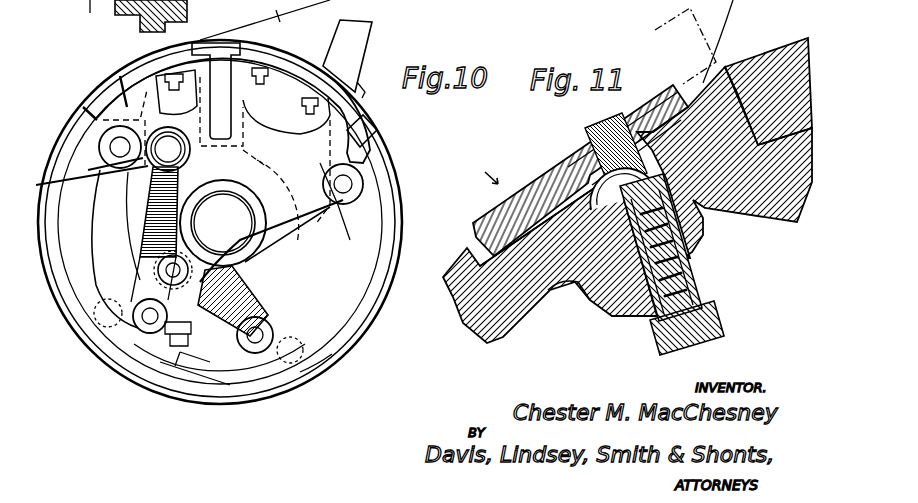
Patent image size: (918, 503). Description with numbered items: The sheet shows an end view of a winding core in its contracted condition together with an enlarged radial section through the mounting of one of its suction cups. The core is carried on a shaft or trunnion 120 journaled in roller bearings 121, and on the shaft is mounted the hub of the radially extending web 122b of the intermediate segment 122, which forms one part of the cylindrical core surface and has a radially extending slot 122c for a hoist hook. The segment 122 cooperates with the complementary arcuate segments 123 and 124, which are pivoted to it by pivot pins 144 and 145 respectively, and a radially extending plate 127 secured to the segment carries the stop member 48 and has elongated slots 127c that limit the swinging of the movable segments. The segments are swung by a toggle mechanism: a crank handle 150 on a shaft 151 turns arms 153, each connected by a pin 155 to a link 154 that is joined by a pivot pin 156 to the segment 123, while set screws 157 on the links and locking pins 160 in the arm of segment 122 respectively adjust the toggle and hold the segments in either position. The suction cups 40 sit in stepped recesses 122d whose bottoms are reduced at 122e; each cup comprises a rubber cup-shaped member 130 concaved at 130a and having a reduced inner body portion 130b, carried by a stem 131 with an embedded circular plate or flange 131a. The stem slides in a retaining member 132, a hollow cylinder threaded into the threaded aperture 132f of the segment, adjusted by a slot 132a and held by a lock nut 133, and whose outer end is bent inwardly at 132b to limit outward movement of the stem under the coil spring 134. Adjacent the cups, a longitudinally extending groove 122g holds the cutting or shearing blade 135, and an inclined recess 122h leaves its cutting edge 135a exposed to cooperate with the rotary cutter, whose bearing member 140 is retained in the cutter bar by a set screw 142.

In FIG. 10, the shaft or trunnion 120 is at (253, 255).
In FIG. 10, the roller bearings 121 is at (293, 11).
In FIG. 10, the segment 122 is at (330, 88).
In FIG. 11, the segment 122 is at (465, 322).
In FIG. 10, the radially extending web 122b is at (307, 203).
In FIG. 10, the radially extending slot 122c is at (265, 20).
In FIG. 11, the recesses 122d is at (470, 246).
In FIG. 11, the reduced bottom portion of recess 122e is at (523, 250).
In FIG. 11, the longitudinally extending groove 122g is at (787, 137).
In FIG. 10, the longitudinal inclined recess 122h is at (363, 100).
In FIG. 10, the segment 123 is at (343, 340).
In FIG. 10, the segment 124 is at (78, 283).
In FIG. 10, the radially extending plate 127 is at (227, 400).
In FIG. 10, the slots 127c is at (100, 333).
In FIG. 11, the cup-shaped member 130 is at (533, 185).
In FIG. 11, the concaved outer side 130a is at (570, 165).
In FIG. 11, the inner body portion 130b is at (650, 118).
In FIG. 11, the stem 131 is at (560, 288).
In FIG. 11, the circular plate or flange 131a is at (584, 150).
In FIG. 11, the retaining member 132 is at (640, 292).
In FIG. 11, the slot 132a is at (696, 322).
In FIG. 11, the inwardly bent outer end 132b is at (704, 215).
In FIG. 11, the bolt flange 132f is at (578, 282).
In FIG. 11, the lock nut 133 is at (597, 307).
In FIG. 11, the coil spring 134 is at (690, 267).
In FIG. 10, the cutting or shearing blade 135 is at (365, 128).
In FIG. 11, the cutting or shearing blade 135 is at (785, 48).
In FIG. 11, the cutting edge 135a is at (727, 67).
In FIG. 10, the bearing member 140 is at (116, 16).
In FIG. 10, the set screw 142 is at (63, 7).
In FIG. 10, the pivot pins 144 is at (345, 184).
In FIG. 10, the pivot pins 145 is at (118, 147).
In FIG. 10, the crank handle 150 is at (160, 153).
In FIG. 10, the shaft 151 is at (148, 322).
In FIG. 10, the arm 153 is at (165, 268).
In FIG. 10, the link 154 is at (240, 296).
In FIG. 10, the pin 155 is at (150, 260).
In FIG. 10, the pivot pin 156 is at (255, 342).
In FIG. 10, the set screws 157 is at (190, 353).
In FIG. 10, the locking pins 160 is at (165, 345).
In FIG. 10, the suction cups 40 is at (313, 60).
In FIG. 11, the suction cups 40 is at (480, 172).
In FIG. 10, the stop member 48 is at (362, 50).